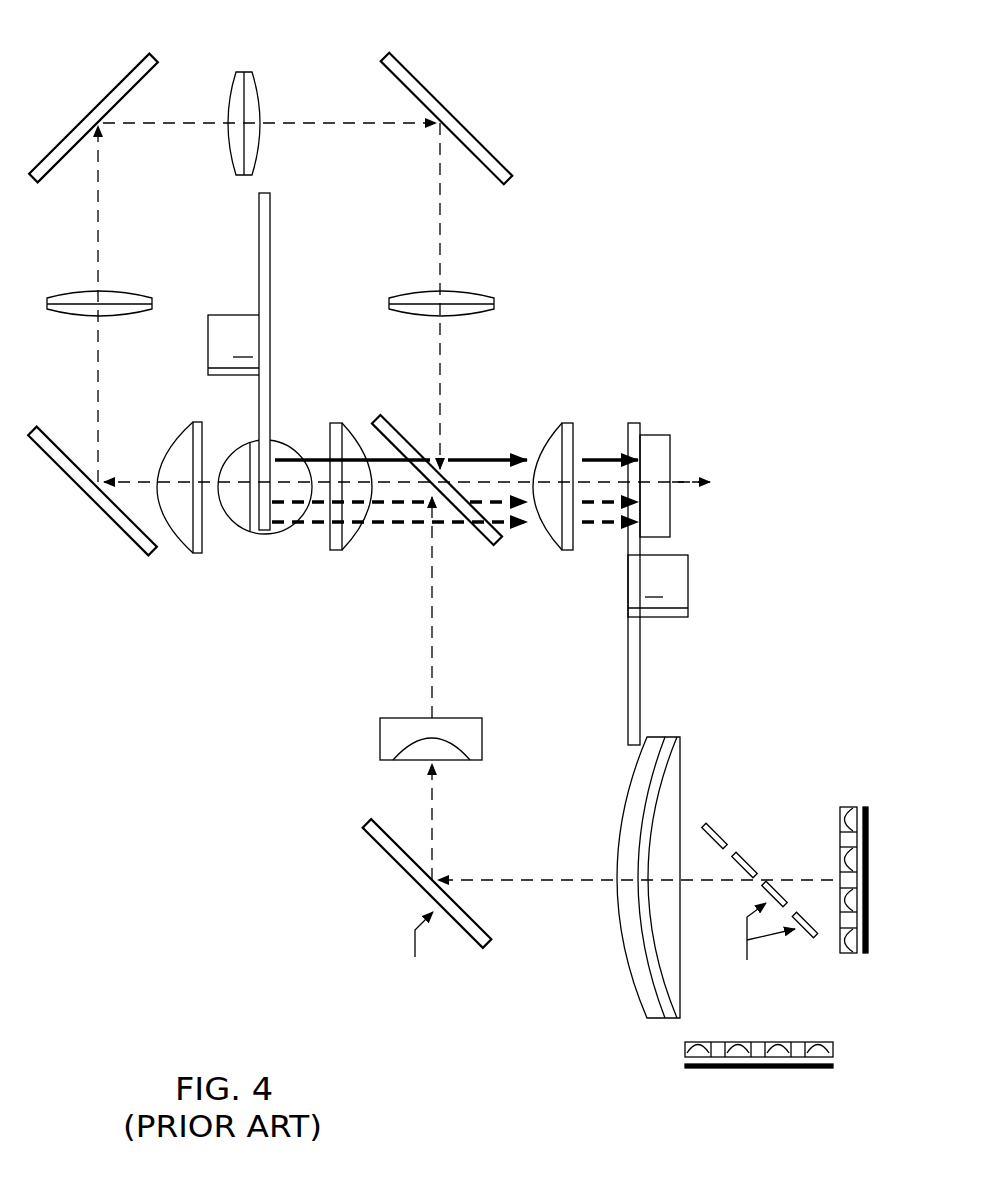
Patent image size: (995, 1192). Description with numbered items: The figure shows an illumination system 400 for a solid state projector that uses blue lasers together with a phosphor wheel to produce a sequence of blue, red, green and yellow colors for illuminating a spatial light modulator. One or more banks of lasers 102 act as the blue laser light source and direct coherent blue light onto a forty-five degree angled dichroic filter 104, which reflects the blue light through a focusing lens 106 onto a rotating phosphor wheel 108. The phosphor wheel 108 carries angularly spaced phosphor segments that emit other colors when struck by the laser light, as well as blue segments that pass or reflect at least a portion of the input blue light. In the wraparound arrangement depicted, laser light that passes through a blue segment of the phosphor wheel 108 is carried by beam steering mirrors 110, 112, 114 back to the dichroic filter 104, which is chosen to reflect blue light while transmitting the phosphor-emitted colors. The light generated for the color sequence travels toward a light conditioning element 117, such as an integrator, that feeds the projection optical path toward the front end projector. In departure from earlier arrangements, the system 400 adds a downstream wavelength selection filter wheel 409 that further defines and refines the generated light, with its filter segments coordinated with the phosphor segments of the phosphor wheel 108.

The illumination system 400 is at (674, 97).
The laser bank 102 is at (838, 833).
The dichroic filter 104 is at (498, 549).
The focusing lens 106 is at (300, 430).
The phosphor wheel 108 is at (258, 283).
The beam steering mirror 110 is at (104, 518).
The mirror 112 is at (104, 93).
The mirror 114 is at (436, 92).
The light conditioning element 117 is at (657, 435).
The filter wheel 409 is at (641, 630).